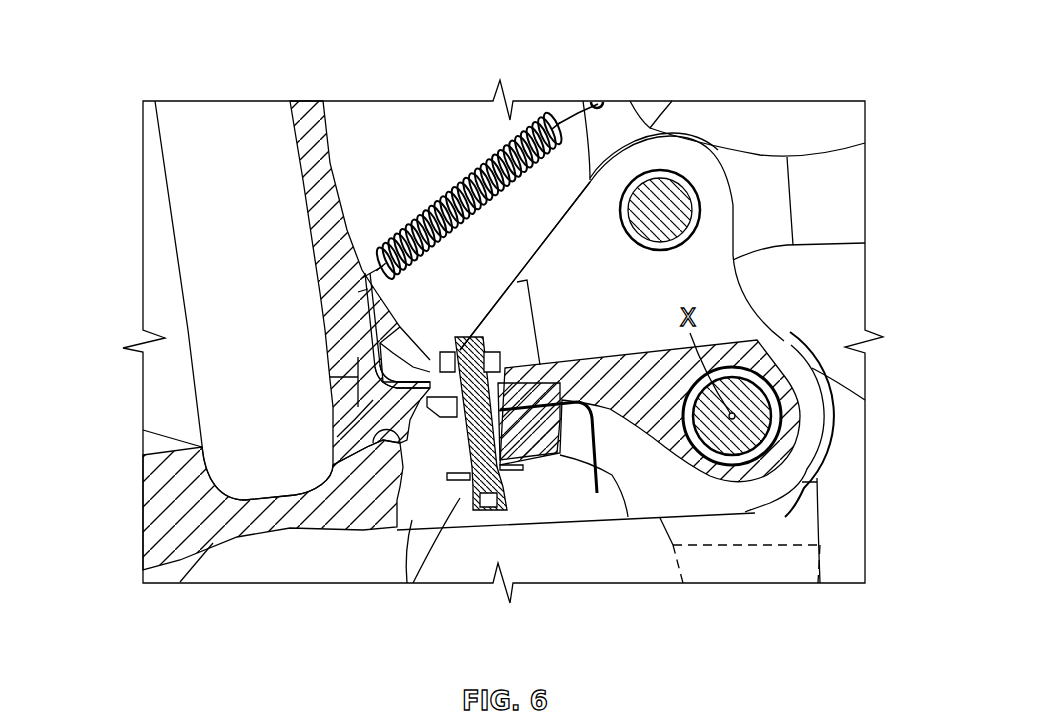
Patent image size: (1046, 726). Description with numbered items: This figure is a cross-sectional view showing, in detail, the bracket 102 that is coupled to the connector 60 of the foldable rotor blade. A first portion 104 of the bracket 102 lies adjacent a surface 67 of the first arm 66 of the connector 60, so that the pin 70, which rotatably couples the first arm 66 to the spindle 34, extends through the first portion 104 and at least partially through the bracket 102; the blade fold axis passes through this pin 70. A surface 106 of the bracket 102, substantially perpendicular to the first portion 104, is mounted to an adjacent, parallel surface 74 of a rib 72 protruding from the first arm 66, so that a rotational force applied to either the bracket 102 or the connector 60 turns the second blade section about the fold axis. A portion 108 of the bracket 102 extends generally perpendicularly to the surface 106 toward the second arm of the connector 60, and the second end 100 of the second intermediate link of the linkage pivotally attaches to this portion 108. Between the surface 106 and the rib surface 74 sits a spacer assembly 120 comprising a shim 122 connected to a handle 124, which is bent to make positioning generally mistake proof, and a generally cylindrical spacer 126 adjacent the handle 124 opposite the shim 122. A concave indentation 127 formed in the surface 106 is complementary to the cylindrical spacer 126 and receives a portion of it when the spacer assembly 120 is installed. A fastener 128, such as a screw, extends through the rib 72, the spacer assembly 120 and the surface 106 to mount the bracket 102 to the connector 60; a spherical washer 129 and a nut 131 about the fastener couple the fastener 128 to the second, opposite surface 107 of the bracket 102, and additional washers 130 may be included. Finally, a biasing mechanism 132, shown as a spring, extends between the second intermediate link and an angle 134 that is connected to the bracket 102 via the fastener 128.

The connector 60 is at (136, 65).
The second end of the second intermediate link 100 is at (652, 126).
The bracket 102 is at (846, 289).
The first portion of the bracket 104 is at (787, 425).
The fastener 70 is at (803, 450).
The surface of the first arm 67 is at (822, 420).
The portion of the bracket 108 is at (735, 297).
The surface of the bracket 106 is at (338, 461).
The spherical washer 129 is at (345, 425).
The nut 131 is at (400, 358).
The angle 134 is at (365, 325).
The biasing mechanism 132 is at (475, 172).
The second surface of the bracket 107 is at (507, 340).
The concave indentation 127 is at (558, 368).
The fastener 128 is at (465, 340).
The washers 130 is at (412, 520).
The cylindrical spacer 126 is at (455, 473).
The spacer assembly 120 is at (490, 511).
The shim 122 is at (533, 455).
The handle 124 is at (605, 500).
The rib 72 is at (557, 500).
The surface of the rib 74 is at (390, 500).
The first arm 66 is at (390, 527).
The spindle 34 is at (722, 578).